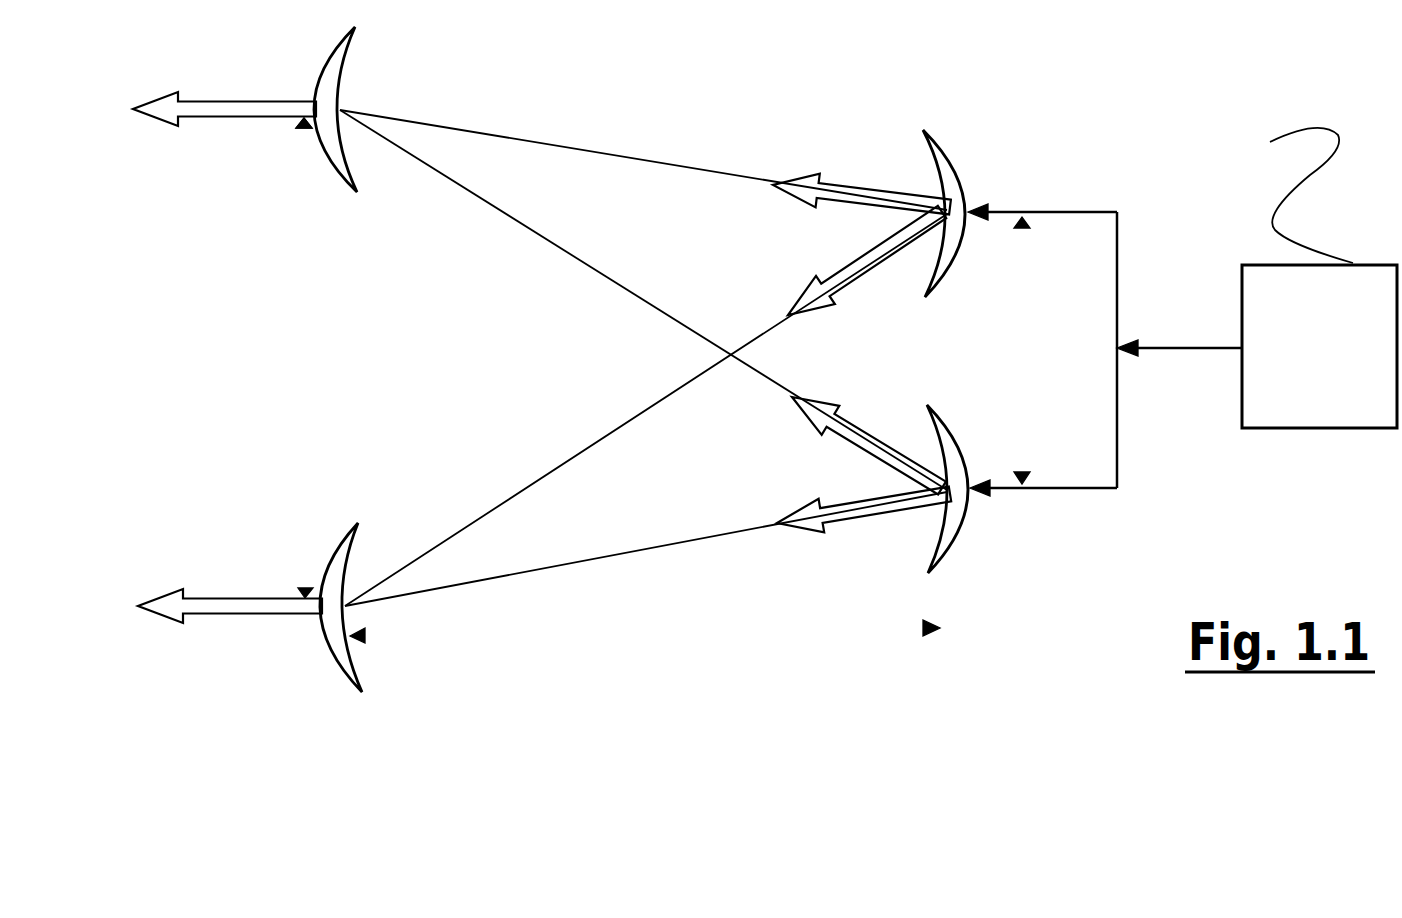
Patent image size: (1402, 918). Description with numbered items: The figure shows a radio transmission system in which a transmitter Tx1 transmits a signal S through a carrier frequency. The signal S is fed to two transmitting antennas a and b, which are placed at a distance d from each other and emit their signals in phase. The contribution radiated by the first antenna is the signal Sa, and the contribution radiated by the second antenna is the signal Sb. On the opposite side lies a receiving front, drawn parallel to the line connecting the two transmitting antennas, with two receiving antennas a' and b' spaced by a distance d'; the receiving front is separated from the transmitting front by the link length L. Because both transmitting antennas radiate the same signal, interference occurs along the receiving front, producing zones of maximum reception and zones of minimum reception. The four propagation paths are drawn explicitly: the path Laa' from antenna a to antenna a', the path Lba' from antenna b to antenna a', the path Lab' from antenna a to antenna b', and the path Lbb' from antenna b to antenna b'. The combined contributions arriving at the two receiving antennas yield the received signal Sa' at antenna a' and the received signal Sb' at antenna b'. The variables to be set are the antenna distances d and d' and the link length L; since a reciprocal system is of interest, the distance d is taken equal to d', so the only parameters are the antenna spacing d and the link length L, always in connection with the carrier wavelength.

The antenna a is at (958, 206).
The receiving antenna a' is at (323, 109).
The antenna b is at (968, 498).
The receiving antenna b' is at (322, 607).
The signal from antenna a Sa is at (862, 236).
The signal from antenna b Sb is at (864, 477).
The signal received at antenna a' Sa' is at (224, 98).
The signal received at antenna b' Sb' is at (230, 593).
The path from antenna a to antenna a' Laa' is at (643, 160).
The path from antenna b to antenna a' Lba' is at (643, 300).
The path from antenna a to antenna b' Lab' is at (646, 410).
The path from antenna b to antenna b' Lbb' is at (646, 549).
The signal S is at (1105, 350).
The transmitter Tx1 is at (1288, 277).
The distance between transmitting antennas d is at (1006, 350).
The distance between receiving antennas d' is at (292, 246).
The link length L is at (645, 622).